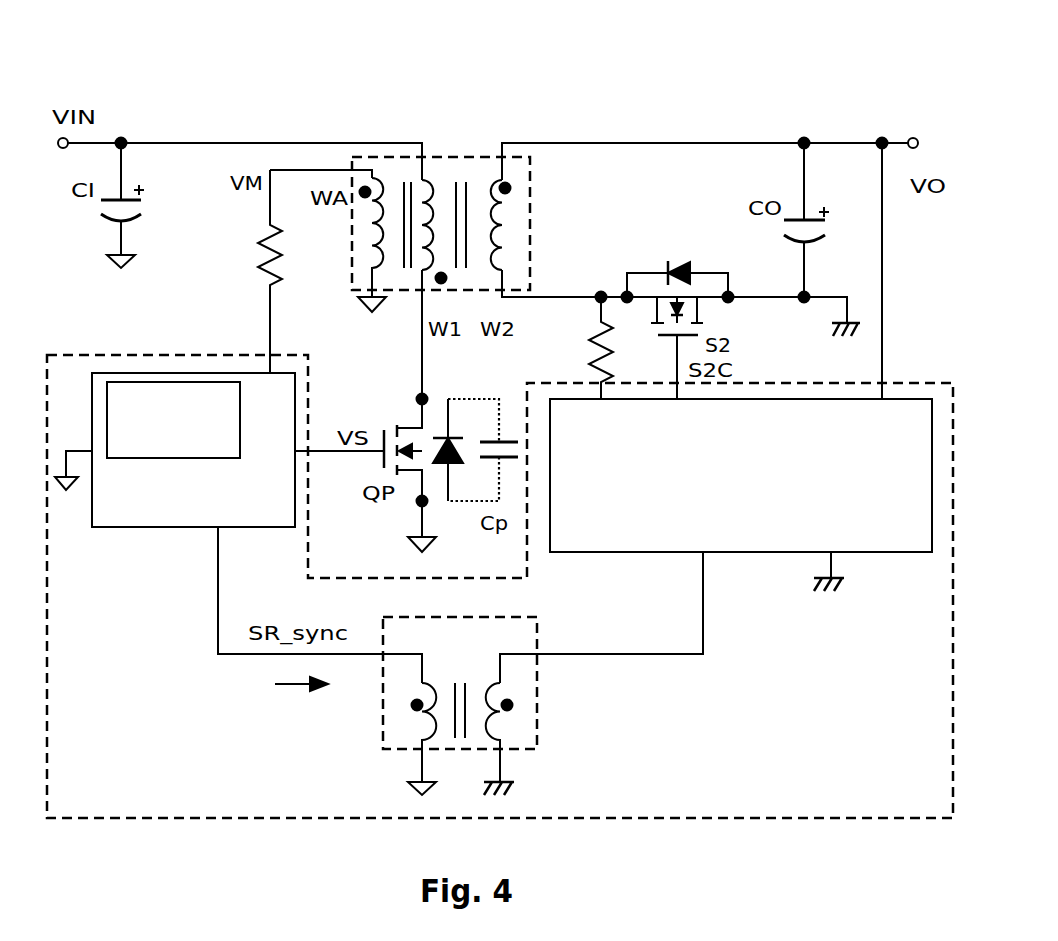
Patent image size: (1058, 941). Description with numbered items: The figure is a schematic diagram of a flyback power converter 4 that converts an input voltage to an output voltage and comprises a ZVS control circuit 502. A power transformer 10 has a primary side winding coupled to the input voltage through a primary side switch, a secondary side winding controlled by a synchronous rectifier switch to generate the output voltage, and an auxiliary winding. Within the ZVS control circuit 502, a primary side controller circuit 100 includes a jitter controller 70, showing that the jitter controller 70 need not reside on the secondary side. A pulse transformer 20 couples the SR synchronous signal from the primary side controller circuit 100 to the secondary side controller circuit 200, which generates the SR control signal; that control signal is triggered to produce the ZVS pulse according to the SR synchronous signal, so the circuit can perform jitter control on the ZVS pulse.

The flyback power converter 4 is at (180, 33).
The power transformer 10 is at (531, 170).
The pulse transformer 20 is at (469, 649).
The jitter controller 70 is at (127, 382).
The primary side controller circuit 100 is at (172, 428).
The secondary side controller circuit 200 is at (741, 475).
The ZVS control circuit 502 is at (919, 790).